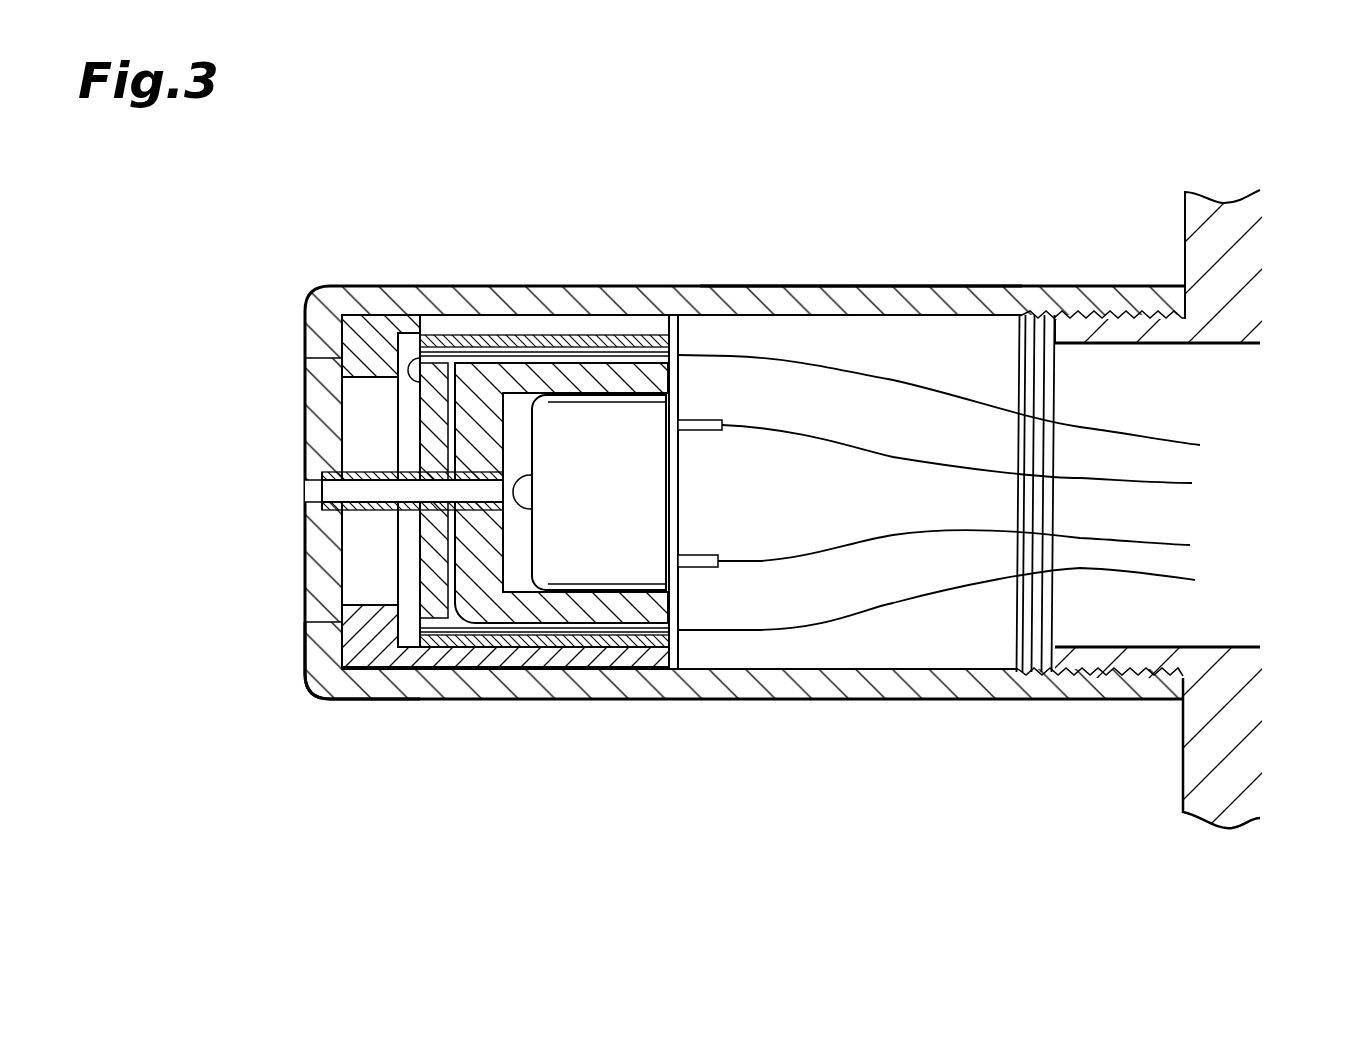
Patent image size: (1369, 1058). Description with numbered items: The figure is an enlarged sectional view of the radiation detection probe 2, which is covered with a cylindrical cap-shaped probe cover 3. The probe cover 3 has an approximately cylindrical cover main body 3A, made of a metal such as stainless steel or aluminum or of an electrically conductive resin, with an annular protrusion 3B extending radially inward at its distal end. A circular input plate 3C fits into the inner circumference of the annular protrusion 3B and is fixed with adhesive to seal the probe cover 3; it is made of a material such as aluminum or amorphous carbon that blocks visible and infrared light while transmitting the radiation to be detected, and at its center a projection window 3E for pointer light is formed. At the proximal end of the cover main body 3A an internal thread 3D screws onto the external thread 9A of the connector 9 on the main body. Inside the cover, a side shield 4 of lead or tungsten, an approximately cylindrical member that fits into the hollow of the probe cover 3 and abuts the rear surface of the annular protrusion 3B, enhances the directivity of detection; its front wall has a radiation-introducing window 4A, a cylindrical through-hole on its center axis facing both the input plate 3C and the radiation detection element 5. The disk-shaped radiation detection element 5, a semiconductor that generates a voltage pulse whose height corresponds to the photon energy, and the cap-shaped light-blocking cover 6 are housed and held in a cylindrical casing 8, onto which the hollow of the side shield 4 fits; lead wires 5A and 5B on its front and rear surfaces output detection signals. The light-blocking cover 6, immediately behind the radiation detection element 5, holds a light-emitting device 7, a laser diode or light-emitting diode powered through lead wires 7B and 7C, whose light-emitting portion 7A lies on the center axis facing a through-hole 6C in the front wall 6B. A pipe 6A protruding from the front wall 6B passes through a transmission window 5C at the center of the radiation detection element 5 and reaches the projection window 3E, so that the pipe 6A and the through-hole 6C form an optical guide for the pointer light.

The radiation detection probe 2 is at (792, 258).
The probe cover 3 is at (590, 280).
The cover main body 3A is at (910, 287).
The annular protrusion 3B is at (320, 643).
The input plate 3C is at (326, 384).
The internal thread 3D is at (1040, 633).
The projection window 3E is at (300, 481).
The side shield 4 is at (370, 680).
The radiation-introducing window 4A is at (339, 593).
The radiation detection element 5 is at (408, 410).
The lead wire 5A is at (1133, 437).
The lead wire 5B is at (1173, 582).
The transmission window 5C is at (427, 488).
The light-blocking cover 6 is at (676, 612).
The pipe 6A is at (350, 448).
The front wall 6B is at (472, 575).
The through-hole 6C is at (502, 540).
The light-emitting device 7 is at (525, 545).
The light-emitting portion 7A is at (527, 473).
The lead wire 7B is at (1163, 482).
The lead wire 7C is at (1170, 540).
The casing 8 is at (680, 337).
The connector 9 is at (1126, 298).
The external thread 9A is at (1113, 673).